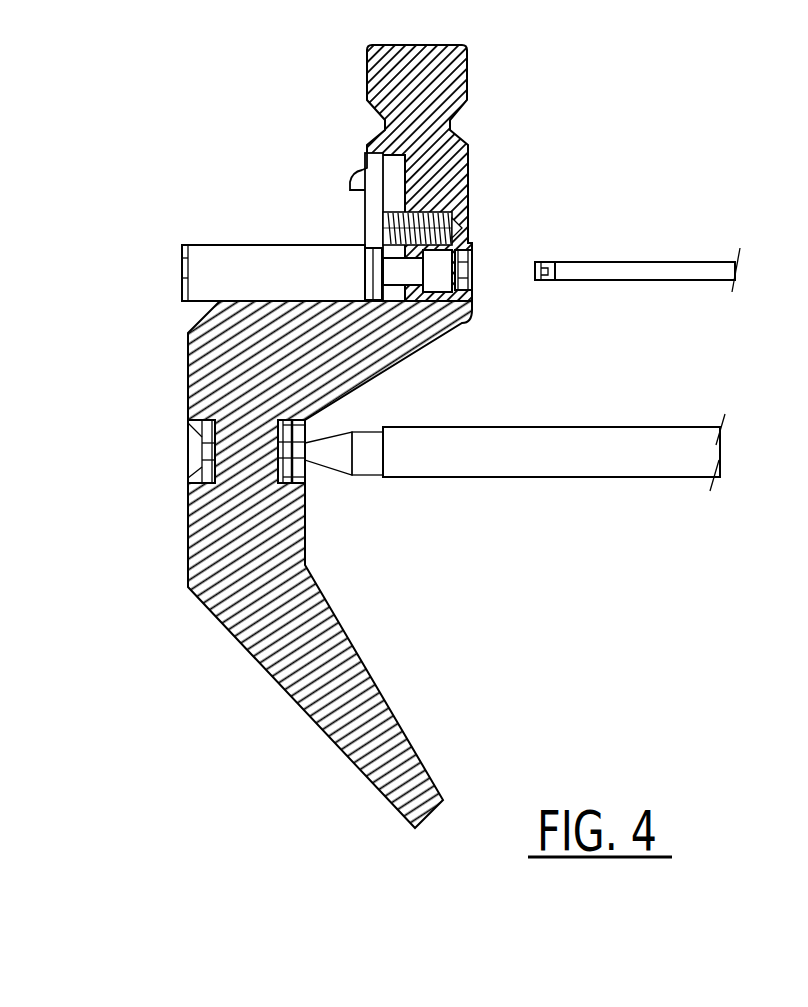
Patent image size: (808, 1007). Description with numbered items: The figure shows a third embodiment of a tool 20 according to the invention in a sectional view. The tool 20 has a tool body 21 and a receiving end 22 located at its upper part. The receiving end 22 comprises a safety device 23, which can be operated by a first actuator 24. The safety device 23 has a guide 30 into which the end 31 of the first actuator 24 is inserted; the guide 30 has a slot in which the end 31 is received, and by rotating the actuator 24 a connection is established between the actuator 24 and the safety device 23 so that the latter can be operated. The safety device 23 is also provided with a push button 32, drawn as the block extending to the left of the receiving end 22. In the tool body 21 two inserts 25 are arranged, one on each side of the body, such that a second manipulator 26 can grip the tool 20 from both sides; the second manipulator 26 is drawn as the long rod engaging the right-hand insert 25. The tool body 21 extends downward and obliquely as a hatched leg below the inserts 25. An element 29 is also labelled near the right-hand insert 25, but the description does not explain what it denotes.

The tool 20 is at (140, 351).
The tool body 21 is at (202, 555).
The receiving end 22 is at (455, 65).
The safety device 23 is at (372, 220).
The first actuator 24 is at (612, 267).
The insert 25 is at (202, 478).
The second manipulator 26 is at (598, 440).
The nut 29 is at (313, 458).
The guide 30 is at (440, 283).
The end of the manipulator 31 is at (540, 263).
The push button 32 is at (227, 257).